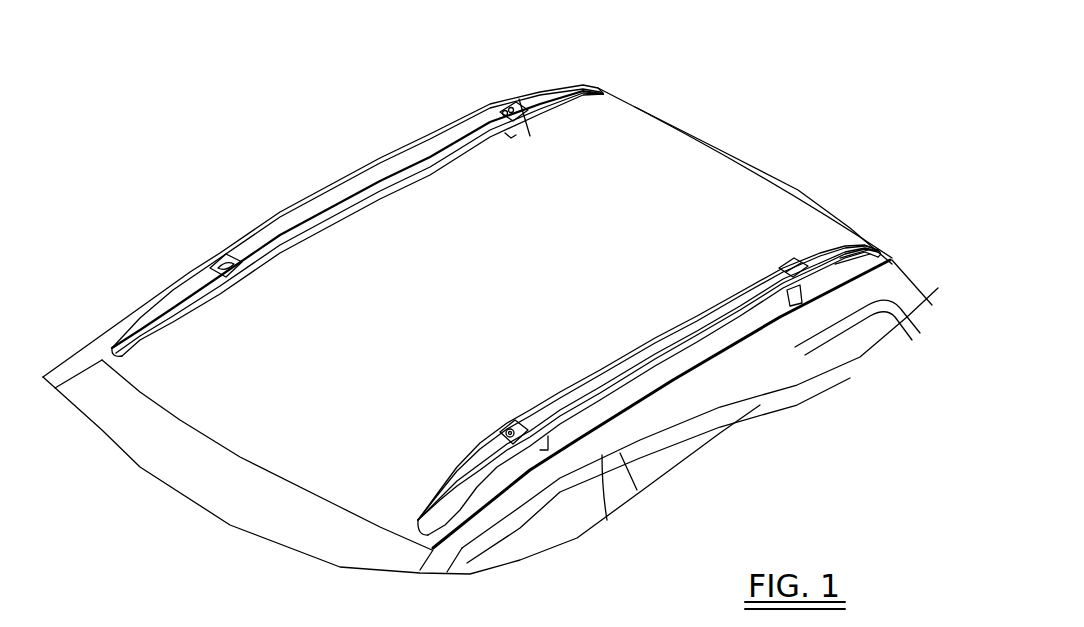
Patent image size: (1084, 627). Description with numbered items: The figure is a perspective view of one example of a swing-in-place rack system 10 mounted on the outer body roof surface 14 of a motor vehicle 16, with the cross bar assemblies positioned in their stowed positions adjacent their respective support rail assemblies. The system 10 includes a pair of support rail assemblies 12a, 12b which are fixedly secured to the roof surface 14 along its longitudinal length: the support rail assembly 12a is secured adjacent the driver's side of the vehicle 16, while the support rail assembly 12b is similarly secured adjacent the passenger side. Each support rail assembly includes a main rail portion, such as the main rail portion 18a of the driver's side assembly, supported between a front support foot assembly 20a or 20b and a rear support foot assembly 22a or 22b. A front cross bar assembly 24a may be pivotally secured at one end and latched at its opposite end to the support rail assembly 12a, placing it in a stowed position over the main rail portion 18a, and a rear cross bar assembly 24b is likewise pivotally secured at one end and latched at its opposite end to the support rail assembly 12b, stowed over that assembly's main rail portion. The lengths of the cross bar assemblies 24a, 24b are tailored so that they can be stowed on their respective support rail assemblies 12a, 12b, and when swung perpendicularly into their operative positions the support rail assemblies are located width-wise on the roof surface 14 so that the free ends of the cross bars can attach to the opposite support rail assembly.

The swing-in-place rack system 10 is at (757, 72).
The outer body roof surface 14 is at (240, 415).
The motor vehicle 16 is at (110, 320).
The support rail assembly 12a is at (646, 372).
The support rail assembly 12b is at (332, 183).
The main rail portion 18a is at (733, 313).
The front support foot assembly 20a is at (452, 490).
The front support foot assembly 20b is at (174, 293).
The rear support foot assembly 22a is at (870, 256).
The rear support foot assembly 22b is at (542, 95).
The front cross bar assembly 24a is at (693, 310).
The rear cross bar assembly 24b is at (430, 138).